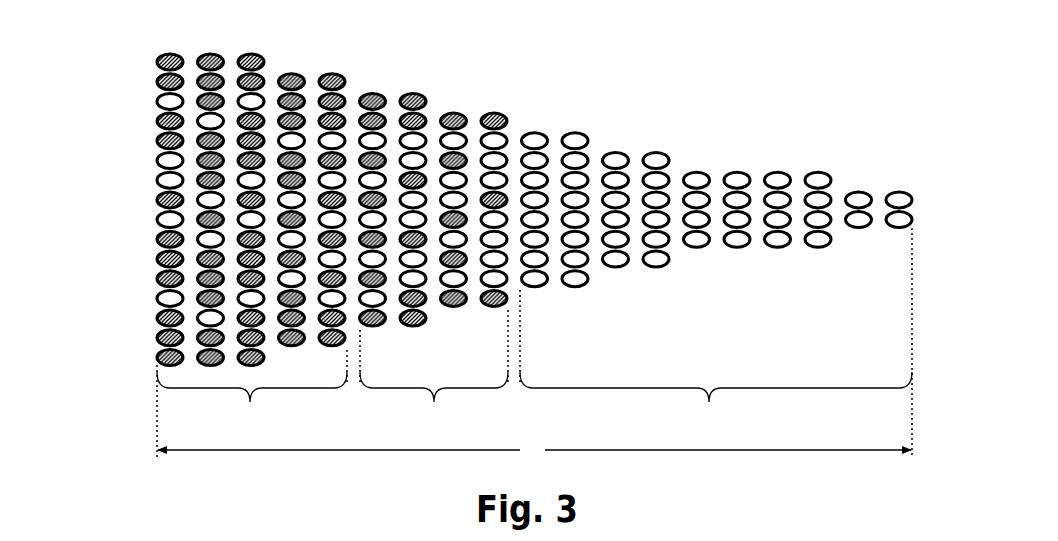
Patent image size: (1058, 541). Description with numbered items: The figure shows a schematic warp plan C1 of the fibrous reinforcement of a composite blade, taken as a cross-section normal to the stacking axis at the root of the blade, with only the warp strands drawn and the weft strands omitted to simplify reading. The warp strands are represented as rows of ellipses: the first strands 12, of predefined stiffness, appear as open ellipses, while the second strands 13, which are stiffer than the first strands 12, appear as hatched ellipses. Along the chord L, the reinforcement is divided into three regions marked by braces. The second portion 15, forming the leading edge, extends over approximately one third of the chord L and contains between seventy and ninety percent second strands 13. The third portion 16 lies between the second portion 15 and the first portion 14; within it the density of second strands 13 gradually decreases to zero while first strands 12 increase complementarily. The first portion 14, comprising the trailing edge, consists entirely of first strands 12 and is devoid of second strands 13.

The first strands 12 is at (157, 162).
The second strands 13 is at (157, 63).
The first portion 14 is at (716, 294).
The second portion 15 is at (252, 254).
The third portion 16 is at (434, 260).
The warp plan C1 is at (772, 68).
The chord L is at (534, 451).